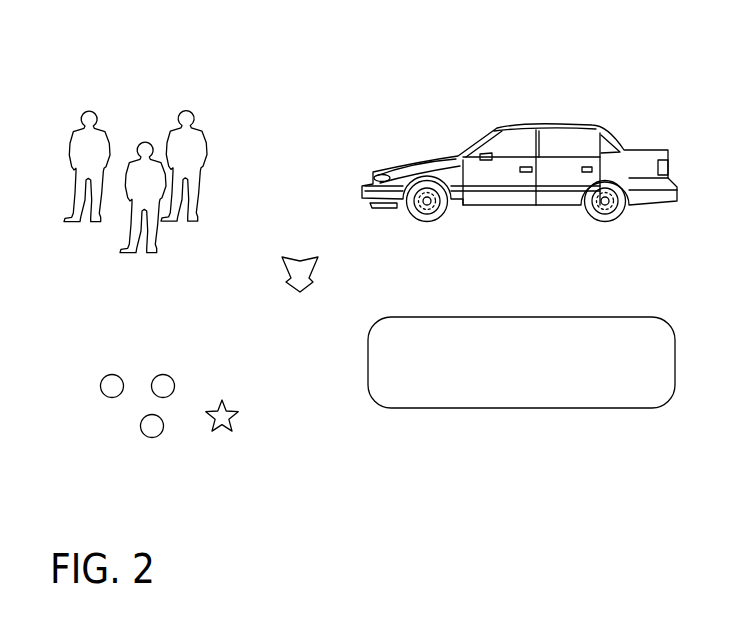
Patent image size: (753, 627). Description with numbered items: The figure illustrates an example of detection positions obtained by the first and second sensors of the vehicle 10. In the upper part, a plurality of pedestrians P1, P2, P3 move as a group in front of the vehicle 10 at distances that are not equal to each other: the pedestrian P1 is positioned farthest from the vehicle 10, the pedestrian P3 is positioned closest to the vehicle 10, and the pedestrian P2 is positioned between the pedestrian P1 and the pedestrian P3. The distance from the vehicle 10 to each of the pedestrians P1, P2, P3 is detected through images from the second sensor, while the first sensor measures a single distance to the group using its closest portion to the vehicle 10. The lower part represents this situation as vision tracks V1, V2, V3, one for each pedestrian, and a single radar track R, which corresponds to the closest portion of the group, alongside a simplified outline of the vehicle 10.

The pedestrian P1 is at (89, 110).
The pedestrian P2 is at (146, 142).
The pedestrian P3 is at (186, 109).
The vehicle 10 is at (567, 123).
The vision track V1 is at (103, 392).
The vision track V2 is at (142, 428).
The vision track V3 is at (162, 384).
The radar track R is at (223, 427).